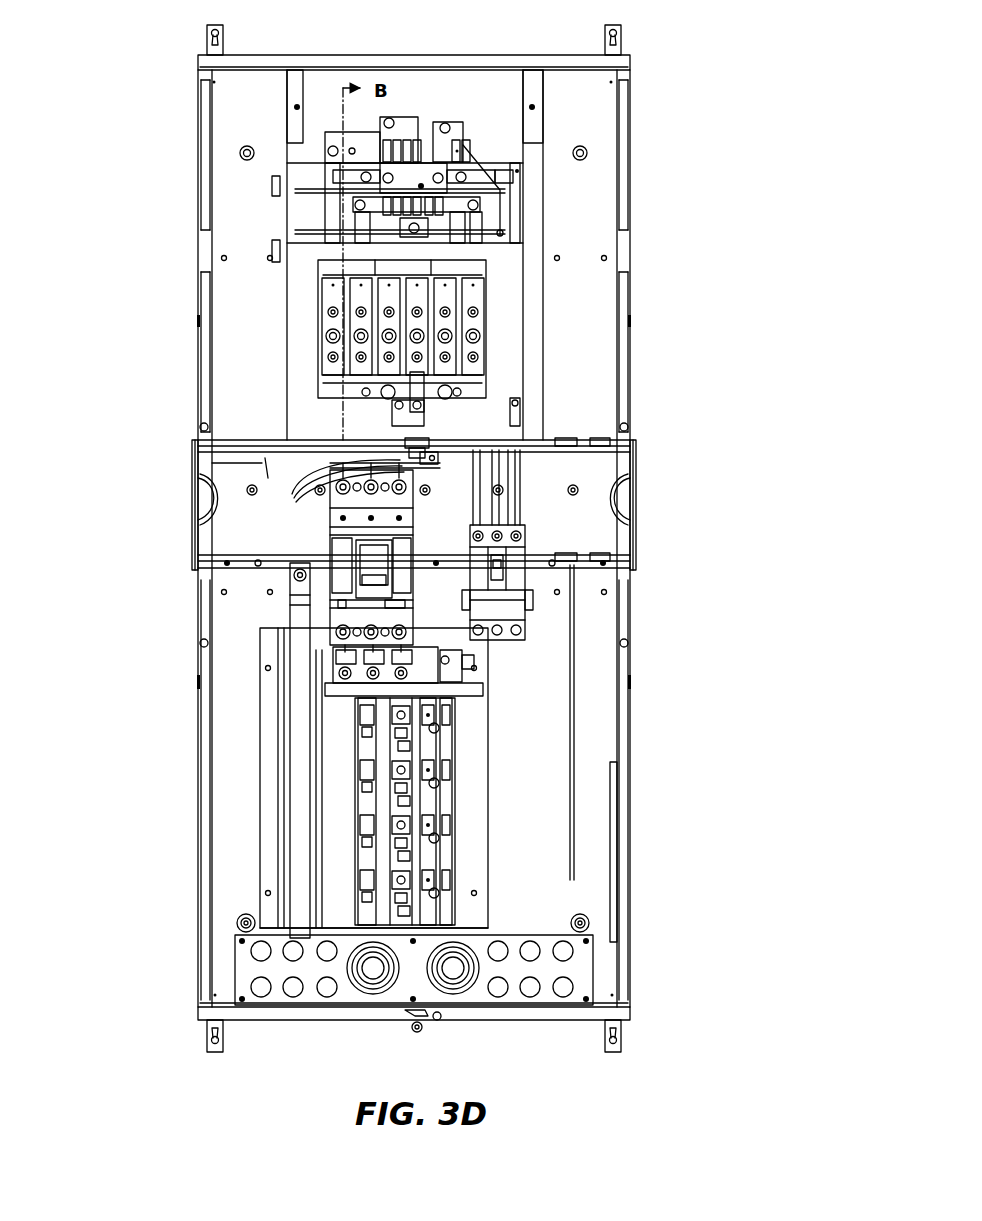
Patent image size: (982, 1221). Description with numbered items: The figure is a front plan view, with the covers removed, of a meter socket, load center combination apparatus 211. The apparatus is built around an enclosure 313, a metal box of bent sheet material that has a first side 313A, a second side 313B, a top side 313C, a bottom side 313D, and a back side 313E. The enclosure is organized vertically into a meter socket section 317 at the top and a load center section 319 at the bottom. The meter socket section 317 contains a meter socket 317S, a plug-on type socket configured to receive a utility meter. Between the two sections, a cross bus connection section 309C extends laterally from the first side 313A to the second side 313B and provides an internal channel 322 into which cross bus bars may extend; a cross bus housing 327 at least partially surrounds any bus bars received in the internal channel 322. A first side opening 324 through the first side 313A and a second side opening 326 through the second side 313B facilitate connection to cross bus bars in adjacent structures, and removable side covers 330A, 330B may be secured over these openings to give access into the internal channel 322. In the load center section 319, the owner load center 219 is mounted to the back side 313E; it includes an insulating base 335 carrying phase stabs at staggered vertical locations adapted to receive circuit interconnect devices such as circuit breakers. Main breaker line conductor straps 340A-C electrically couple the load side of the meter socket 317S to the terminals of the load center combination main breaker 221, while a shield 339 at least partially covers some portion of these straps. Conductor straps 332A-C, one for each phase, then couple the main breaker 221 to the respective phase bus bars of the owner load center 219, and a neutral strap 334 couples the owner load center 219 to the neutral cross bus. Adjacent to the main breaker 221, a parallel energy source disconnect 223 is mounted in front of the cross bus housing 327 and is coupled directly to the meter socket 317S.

The meter socket, load center combination apparatus 211 is at (173, 178).
The enclosure 313 is at (197, 127).
The first side 313A is at (199, 938).
The second side 313B is at (631, 614).
The top side 313C is at (463, 55).
The bottom side 313D is at (513, 1017).
The back side 313E is at (245, 345).
The meter socket section 317 is at (643, 64).
The meter socket 317S is at (287, 213).
The load center section 319 is at (645, 574).
The internal channel 322 is at (572, 442).
The first side opening 324 is at (197, 497).
The second side opening 326 is at (631, 505).
The cross bus housing 327 is at (278, 468).
The removable side cover 330A is at (283, 492).
The removable side cover 330B is at (635, 460).
The cross bus connection section 309C is at (638, 438).
The shield 339 is at (298, 400).
The main breaker line conductor straps 340A-C is at (330, 465).
The load center combination main breaker 221 is at (320, 542).
The parallel energy source disconnect 223 is at (528, 548).
The neutral strap 334 is at (297, 623).
The owner load center 219 is at (258, 668).
The conductor straps 332A-C is at (387, 675).
The base 335 is at (398, 775).